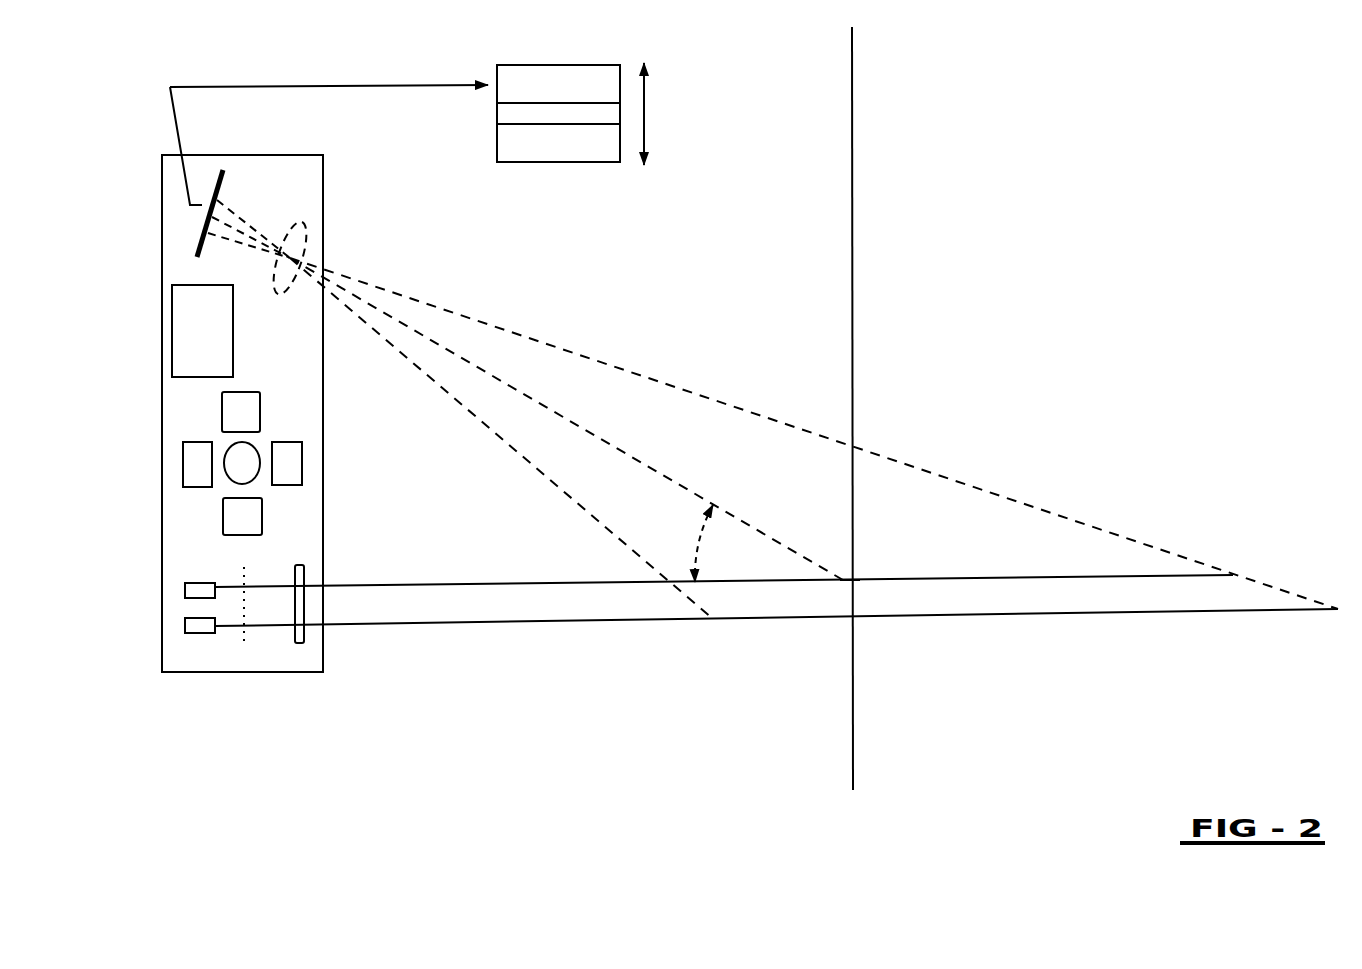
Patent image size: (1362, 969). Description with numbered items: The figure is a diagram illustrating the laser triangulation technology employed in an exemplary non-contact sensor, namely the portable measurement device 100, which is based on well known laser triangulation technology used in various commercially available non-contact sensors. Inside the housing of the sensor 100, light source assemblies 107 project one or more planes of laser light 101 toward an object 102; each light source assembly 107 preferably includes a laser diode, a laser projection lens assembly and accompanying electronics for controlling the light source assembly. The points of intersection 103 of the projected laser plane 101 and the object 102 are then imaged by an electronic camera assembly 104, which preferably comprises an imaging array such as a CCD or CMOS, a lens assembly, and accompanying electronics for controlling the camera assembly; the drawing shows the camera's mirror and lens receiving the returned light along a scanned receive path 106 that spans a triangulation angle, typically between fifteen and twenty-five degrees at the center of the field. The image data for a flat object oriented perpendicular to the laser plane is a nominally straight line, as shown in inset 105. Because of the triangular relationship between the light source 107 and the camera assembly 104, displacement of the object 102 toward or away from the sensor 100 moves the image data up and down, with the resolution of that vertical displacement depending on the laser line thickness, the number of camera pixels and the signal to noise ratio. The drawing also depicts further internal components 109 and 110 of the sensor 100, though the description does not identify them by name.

The portable measurement device 100 is at (268, 687).
The planes of laser light 101 is at (543, 610).
The object 102 is at (850, 695).
The points of intersection 103 is at (850, 588).
The electronic camera assembly 104 is at (235, 182).
The inset 105 is at (590, 183).
The scanned receive beam 106 is at (680, 532).
The light source assemblies 107 is at (173, 595).
The processor 109 is at (239, 327).
The sensor components 110 is at (257, 402).